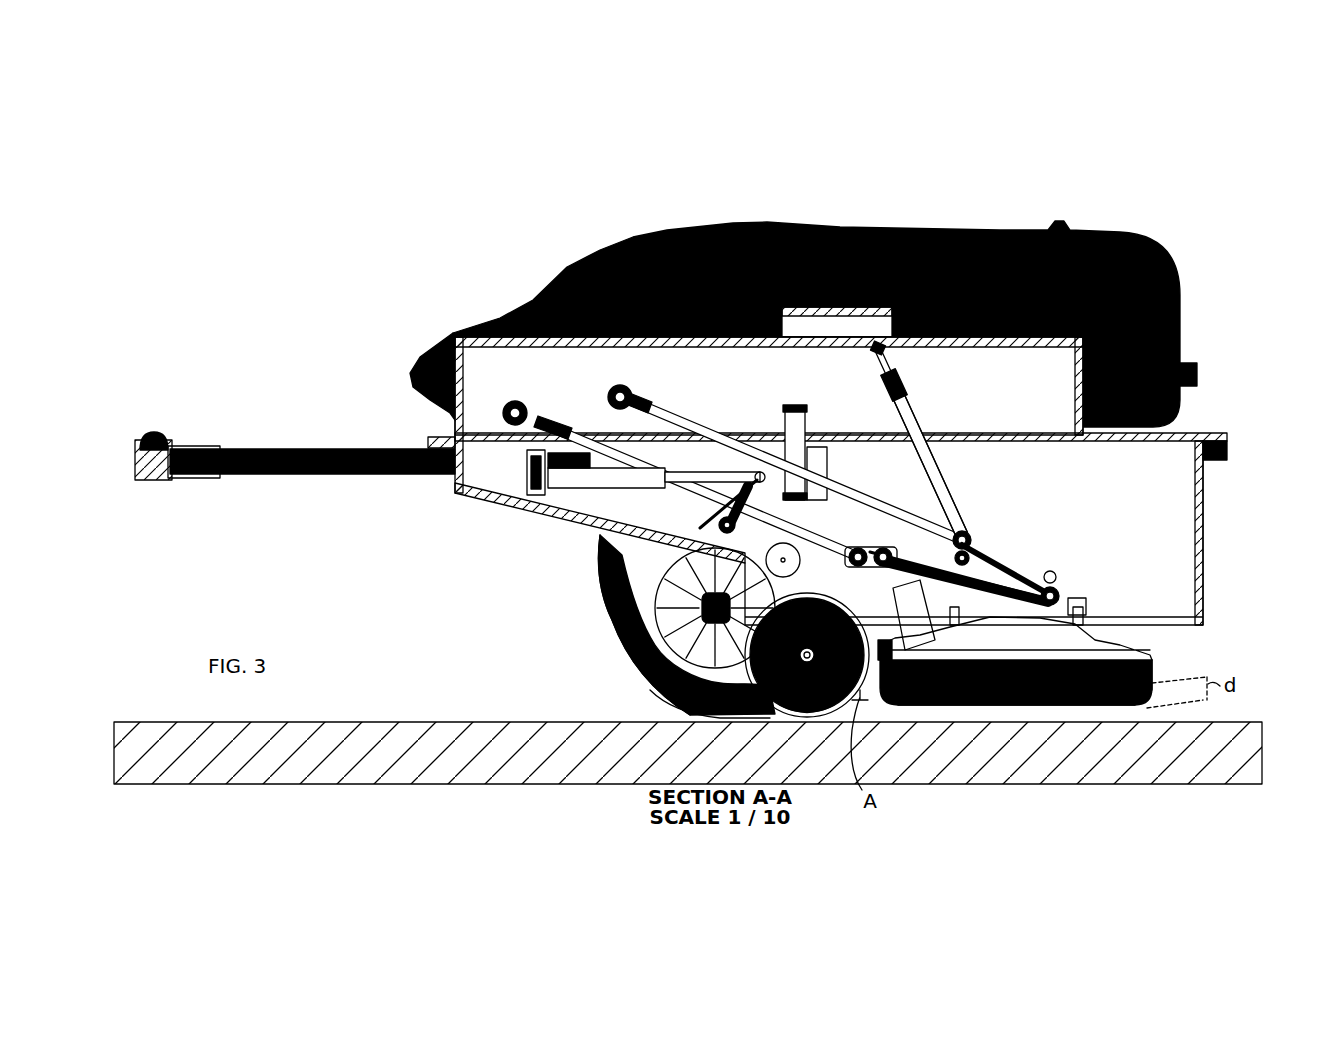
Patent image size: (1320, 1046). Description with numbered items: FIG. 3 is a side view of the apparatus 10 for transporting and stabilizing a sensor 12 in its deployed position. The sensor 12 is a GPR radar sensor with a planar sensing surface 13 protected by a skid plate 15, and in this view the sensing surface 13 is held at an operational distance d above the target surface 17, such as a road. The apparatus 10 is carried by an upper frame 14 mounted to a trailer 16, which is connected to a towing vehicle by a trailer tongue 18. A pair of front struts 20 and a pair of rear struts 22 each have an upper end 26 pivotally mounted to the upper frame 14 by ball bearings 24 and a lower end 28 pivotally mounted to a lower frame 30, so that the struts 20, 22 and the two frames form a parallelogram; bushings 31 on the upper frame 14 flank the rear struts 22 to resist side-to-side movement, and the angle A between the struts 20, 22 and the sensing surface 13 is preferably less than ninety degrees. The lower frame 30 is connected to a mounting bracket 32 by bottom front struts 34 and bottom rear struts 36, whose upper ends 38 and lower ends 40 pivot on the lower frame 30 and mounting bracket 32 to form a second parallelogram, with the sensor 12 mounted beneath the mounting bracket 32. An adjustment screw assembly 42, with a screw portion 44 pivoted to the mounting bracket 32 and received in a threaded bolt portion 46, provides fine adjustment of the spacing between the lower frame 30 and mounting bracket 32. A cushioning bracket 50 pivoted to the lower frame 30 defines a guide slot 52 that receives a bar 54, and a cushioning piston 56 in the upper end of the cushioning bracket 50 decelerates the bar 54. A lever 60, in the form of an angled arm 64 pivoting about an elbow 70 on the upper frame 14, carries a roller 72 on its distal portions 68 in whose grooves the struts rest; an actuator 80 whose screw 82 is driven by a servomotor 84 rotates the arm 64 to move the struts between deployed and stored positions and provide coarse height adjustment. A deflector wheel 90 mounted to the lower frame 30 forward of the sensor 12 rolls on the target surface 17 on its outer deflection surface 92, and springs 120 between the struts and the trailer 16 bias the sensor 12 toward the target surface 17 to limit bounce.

The apparatus 10 is at (1187, 106).
The sensor 12 is at (1153, 692).
The sensing surface 13 is at (1118, 712).
The upper frame 14 is at (512, 402).
The skid plate 15 is at (1158, 660).
The trailer 16 is at (846, 232).
The target surface 17 is at (1067, 713).
The trailer tongue 18 is at (200, 446).
The front struts 20 is at (635, 530).
The rear struts 22 is at (712, 432).
The ball bearings 24 is at (612, 390).
The upper end 26 is at (553, 417).
The lower end 28 is at (900, 540).
The lower frame 30 is at (972, 540).
The bushings 31 is at (793, 404).
The mounting bracket 32 is at (1082, 600).
The bottom front struts 34 is at (893, 586).
The bottom rear struts 36 is at (993, 573).
The upper ends 38 is at (1005, 545).
The lower ends 40 is at (1020, 585).
The adjustment screw assembly 42 is at (1010, 560).
The screw portion 44 is at (973, 713).
The bolt portion 46 is at (913, 713).
The cushioning bracket 50 is at (936, 462).
The guide slot 52 is at (950, 492).
The bar 54 is at (918, 388).
The cushioning piston 56 is at (900, 370).
The lever 60 is at (620, 545).
The angled arm 64 is at (615, 605).
The distal portions 68 is at (636, 655).
The elbow 70 is at (632, 633).
The roller 72 is at (655, 667).
The actuator 80 is at (521, 517).
The screw 82 is at (577, 493).
The servomotor 84 is at (522, 470).
The deflector wheel 90 is at (665, 690).
The outer deflection surface 92 is at (803, 717).
The springs 120 is at (656, 504).